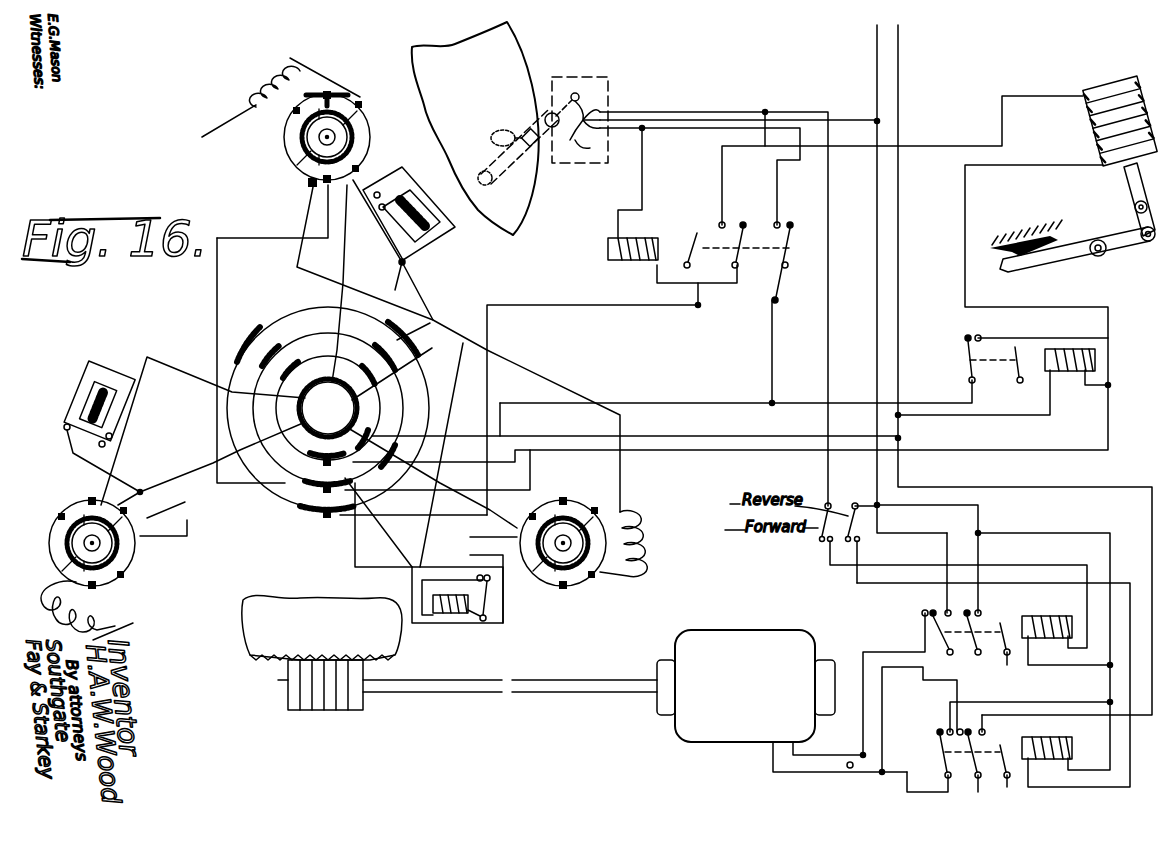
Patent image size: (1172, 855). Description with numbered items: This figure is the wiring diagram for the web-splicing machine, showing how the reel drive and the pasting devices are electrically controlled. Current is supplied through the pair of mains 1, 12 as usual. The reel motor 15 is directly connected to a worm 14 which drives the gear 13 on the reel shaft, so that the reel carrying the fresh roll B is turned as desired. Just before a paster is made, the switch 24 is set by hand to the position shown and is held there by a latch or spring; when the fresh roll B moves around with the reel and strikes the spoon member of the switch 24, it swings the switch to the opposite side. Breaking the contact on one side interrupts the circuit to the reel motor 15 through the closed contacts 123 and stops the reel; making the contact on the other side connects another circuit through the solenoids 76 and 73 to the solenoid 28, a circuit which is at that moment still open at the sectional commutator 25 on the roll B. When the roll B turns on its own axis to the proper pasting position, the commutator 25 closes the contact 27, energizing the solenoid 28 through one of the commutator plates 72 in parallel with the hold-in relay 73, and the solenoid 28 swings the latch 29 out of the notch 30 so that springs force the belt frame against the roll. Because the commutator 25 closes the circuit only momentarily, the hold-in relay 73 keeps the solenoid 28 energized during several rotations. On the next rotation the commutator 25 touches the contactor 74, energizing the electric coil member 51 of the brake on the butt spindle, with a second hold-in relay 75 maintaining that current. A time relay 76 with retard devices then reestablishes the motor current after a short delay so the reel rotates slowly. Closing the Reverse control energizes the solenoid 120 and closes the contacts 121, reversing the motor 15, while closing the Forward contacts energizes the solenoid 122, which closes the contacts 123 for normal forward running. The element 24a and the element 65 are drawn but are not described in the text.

The main 1 is at (872, 44).
The main 12 is at (1024, 370).
The fresh roll B is at (510, 67).
The switch 24 is at (543, 131).
The switch contact arm 24a is at (598, 100).
The sectional commutator 25 is at (300, 143).
The contact 27 is at (324, 90).
The solenoid 28 is at (1112, 80).
The latch 29 is at (1068, 252).
The notch 30 is at (1003, 258).
The electric coil member of the brake 51 is at (276, 75).
The controller drum 65 is at (262, 352).
The commutator plate 72 is at (310, 508).
The hold-in relay 73 is at (1066, 372).
The contactor 74 is at (308, 186).
The hold-in relay 75 is at (478, 632).
The time relay 76 is at (608, 250).
The gear 13 is at (295, 612).
The worm 14 is at (325, 710).
The motor 15 is at (722, 738).
The solenoid 120 is at (1072, 750).
The contacts 121 is at (938, 734).
The solenoid 122 is at (1068, 616).
The contacts 123 is at (930, 610).